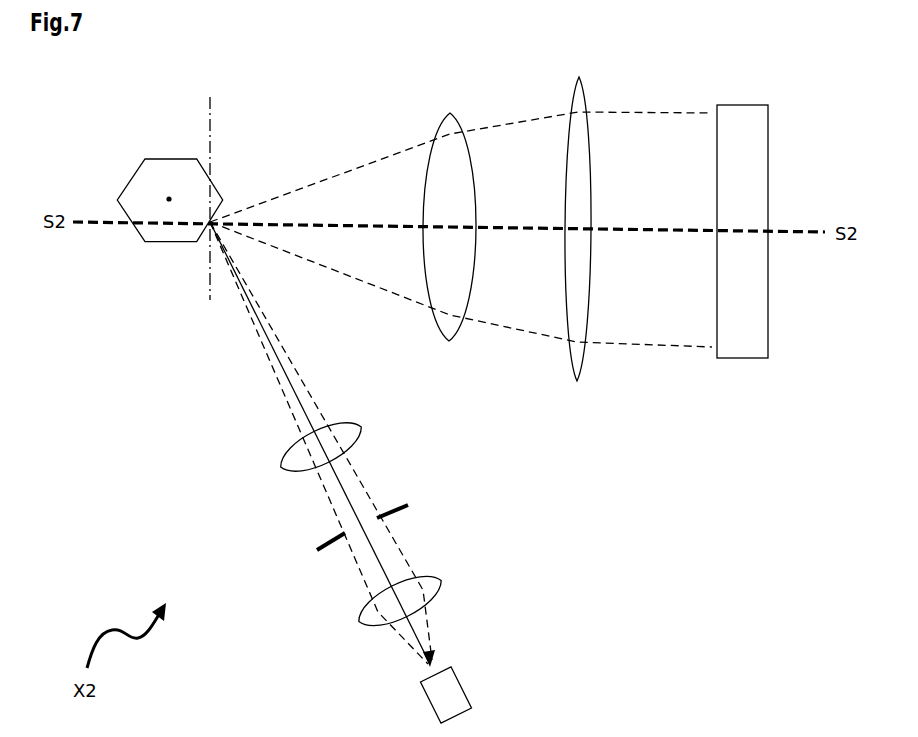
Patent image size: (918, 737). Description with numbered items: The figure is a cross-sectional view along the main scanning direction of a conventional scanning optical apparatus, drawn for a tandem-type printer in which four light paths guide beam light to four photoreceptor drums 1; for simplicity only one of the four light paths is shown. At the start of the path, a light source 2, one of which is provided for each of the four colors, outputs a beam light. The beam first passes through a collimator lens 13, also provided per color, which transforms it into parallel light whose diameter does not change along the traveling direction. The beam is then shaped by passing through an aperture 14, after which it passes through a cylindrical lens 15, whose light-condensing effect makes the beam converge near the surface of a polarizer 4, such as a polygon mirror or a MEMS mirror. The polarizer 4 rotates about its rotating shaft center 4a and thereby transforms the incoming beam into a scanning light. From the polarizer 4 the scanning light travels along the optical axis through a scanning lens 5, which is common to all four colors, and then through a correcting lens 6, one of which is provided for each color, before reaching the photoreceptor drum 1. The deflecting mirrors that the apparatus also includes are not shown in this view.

The photoreceptor drum 1 is at (738, 358).
The light source 2 is at (463, 684).
The polarizer 4 is at (168, 242).
The rotating shaft center 4a is at (169, 197).
The scanning lens 5 is at (448, 342).
The correcting lens 6 is at (577, 382).
The collimator lens 13 is at (437, 590).
The aperture 14 is at (392, 507).
The cylindrical lens 15 is at (330, 420).